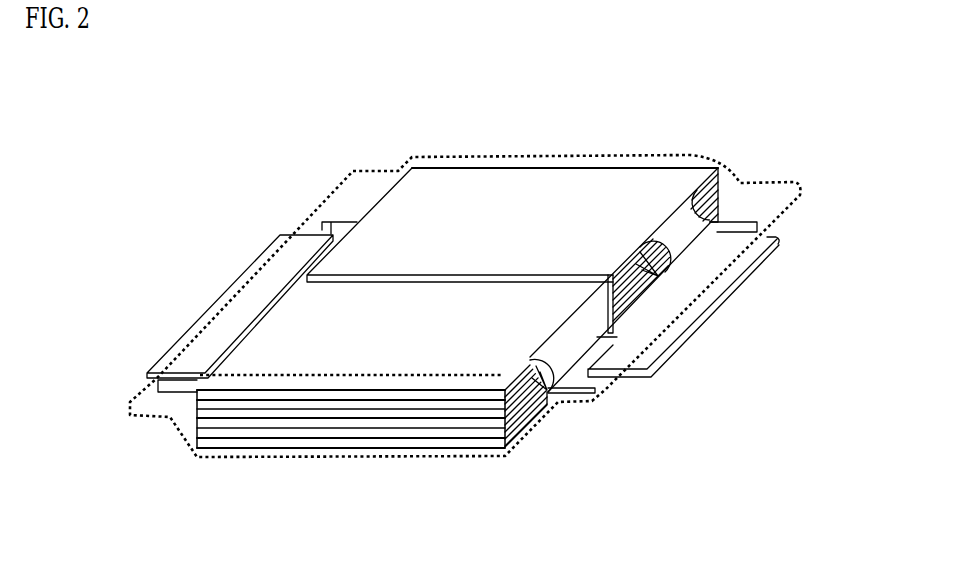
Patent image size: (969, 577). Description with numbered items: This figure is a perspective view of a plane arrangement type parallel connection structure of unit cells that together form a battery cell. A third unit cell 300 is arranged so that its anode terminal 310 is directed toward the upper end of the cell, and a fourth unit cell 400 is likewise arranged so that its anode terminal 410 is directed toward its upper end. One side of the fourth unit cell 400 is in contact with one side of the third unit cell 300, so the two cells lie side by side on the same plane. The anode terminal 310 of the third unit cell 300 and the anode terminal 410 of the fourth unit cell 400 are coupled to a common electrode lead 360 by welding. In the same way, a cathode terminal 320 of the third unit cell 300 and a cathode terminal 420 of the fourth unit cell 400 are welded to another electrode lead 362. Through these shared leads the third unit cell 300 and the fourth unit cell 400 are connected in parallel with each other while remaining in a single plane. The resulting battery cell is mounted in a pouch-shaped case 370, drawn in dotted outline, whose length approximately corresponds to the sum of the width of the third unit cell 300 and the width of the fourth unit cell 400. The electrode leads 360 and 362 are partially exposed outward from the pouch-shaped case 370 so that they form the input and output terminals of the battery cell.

The third unit cell 300 is at (327, 432).
The anode terminal 310 is at (153, 385).
The cathode terminal 320 is at (578, 386).
The electrode lead 360 is at (246, 297).
The electrode lead 362 is at (745, 305).
The pouch-shaped case 370 is at (445, 152).
The fourth unit cell 400 is at (545, 178).
The anode terminal 410 is at (331, 222).
The cathode terminal 420 is at (727, 232).